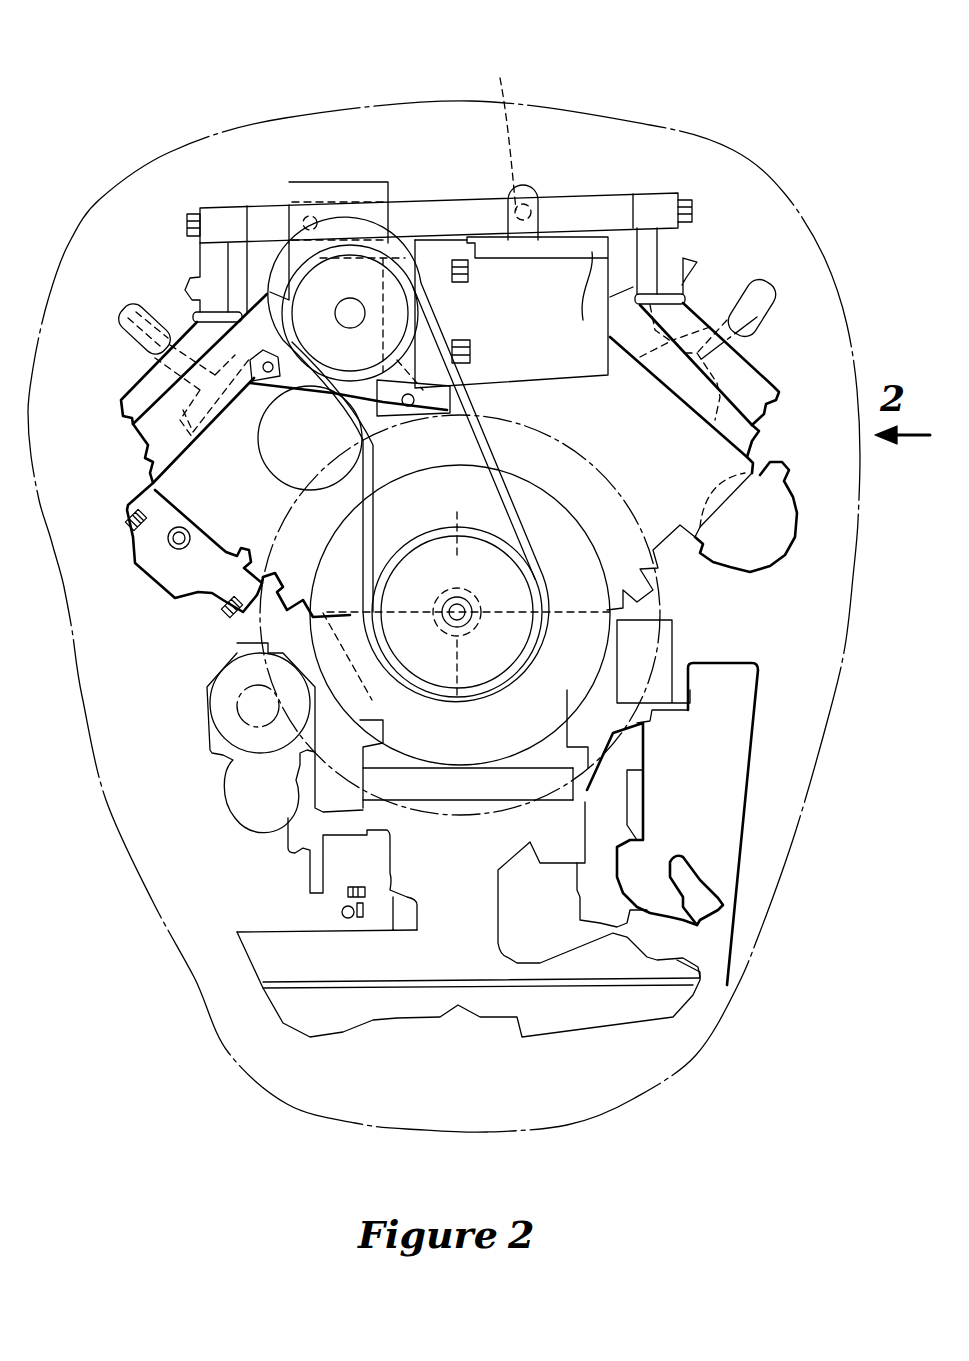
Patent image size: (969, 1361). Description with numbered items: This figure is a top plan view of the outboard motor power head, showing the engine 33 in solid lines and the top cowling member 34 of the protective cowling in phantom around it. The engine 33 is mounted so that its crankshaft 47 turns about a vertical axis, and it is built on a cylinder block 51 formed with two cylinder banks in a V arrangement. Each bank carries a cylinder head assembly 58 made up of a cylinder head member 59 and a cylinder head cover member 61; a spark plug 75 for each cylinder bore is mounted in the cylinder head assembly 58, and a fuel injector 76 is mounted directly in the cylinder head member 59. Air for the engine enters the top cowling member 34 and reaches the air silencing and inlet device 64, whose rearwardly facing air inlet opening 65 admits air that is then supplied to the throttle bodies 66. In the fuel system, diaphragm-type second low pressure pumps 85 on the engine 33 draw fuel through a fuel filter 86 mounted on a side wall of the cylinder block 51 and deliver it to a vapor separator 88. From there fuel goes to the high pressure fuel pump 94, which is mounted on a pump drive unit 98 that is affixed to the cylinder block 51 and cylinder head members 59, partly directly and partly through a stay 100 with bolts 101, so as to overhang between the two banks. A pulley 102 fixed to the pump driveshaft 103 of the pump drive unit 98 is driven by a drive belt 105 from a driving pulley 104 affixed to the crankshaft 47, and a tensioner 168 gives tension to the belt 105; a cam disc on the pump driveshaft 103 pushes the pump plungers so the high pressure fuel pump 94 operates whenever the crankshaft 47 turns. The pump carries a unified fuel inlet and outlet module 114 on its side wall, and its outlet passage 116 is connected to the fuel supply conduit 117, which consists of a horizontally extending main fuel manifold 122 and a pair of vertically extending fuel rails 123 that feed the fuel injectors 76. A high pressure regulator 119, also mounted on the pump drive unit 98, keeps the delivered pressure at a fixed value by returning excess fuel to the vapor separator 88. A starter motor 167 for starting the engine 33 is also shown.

The engine 33 is at (772, 220).
The top cowling member 34 is at (280, 112).
The crankshaft 47 is at (457, 683).
The cylinder block 51 is at (668, 548).
The cylinder head assembly 58 is at (137, 436).
The cylinder head member 59 is at (138, 497).
The cylinder head cover member 61 is at (118, 400).
The air silencing and inlet device 64 is at (400, 1022).
The air inlet opening 65 is at (293, 942).
The throttle bodies 66 is at (500, 833).
The spark plug 75 is at (135, 340).
The fuel injector 76 is at (187, 277).
The second low pressure pumps 85 is at (680, 660).
The fuel filter 86 is at (782, 570).
The vapor separator 88 is at (753, 777).
The high pressure fuel pump 94 is at (565, 268).
The pump drive unit 98 is at (300, 452).
The stay 100 is at (511, 312).
The bolts 101 is at (408, 224).
The pulley 102 is at (384, 410).
The pump driveshaft 103 is at (333, 313).
The driving pulley 104 is at (457, 556).
The drive belt 105 is at (500, 458).
The unified fuel inlet and outlet module 114 is at (577, 301).
The outlet passage 116 is at (504, 129).
The fuel supply conduit 117 is at (599, 194).
The high pressure regulator 119 is at (357, 182).
The main fuel manifold 122 is at (457, 214).
The fuel rails 123 is at (200, 226).
The starter motor 167 is at (212, 693).
The tensioner 168 is at (302, 512).